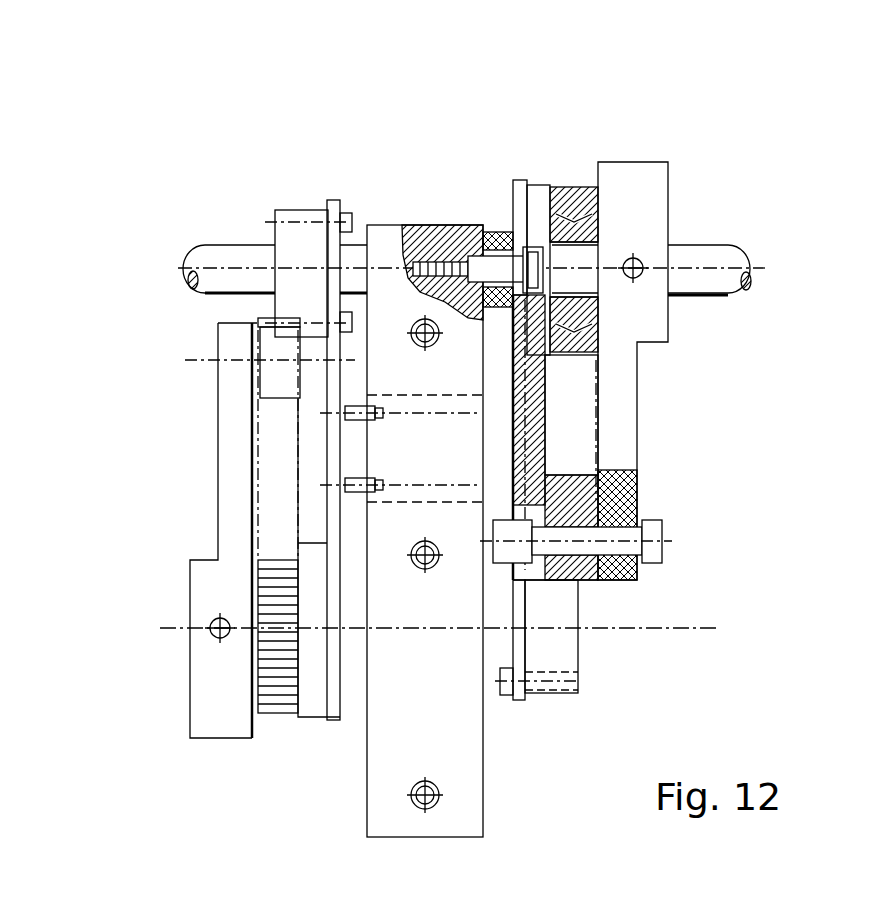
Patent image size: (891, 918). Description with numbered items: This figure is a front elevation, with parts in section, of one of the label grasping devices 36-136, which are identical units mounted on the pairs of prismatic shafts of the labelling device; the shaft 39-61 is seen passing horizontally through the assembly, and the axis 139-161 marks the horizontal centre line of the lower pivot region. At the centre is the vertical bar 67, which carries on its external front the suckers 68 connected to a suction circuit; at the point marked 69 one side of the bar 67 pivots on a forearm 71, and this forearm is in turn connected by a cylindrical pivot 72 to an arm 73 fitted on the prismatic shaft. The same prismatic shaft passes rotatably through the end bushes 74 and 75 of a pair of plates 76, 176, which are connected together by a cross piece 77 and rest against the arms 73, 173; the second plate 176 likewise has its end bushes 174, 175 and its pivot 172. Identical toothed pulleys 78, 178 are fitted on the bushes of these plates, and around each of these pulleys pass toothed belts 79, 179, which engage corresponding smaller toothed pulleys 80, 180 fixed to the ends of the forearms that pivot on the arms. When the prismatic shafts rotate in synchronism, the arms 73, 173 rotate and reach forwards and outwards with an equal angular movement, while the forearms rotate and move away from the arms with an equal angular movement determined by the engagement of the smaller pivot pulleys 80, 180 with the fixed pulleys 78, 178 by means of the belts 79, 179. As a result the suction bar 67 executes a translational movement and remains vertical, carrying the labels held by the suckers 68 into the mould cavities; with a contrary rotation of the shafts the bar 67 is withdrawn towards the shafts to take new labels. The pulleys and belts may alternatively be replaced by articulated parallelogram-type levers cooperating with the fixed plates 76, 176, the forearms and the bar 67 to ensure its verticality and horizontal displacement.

The label grasping devices 36-136 is at (406, 205).
The shaft 39-61 is at (748, 258).
The vertical bar 67 is at (485, 772).
The suckers 68 is at (430, 344).
The pivot point 69 is at (484, 266).
The forearm 71 is at (540, 460).
The cylindrical pivot 72 is at (630, 545).
The arm 73 is at (660, 202).
The end bush 74 is at (535, 183).
The end bush 75 is at (313, 710).
The plate 76 is at (516, 190).
The cross piece 77 is at (352, 500).
The toothed pulley 78 is at (588, 200).
The toothed belt 79 is at (596, 415).
The smaller toothed pulley 80 is at (585, 580).
The axis 139-161 is at (710, 628).
The cylindrical pivot 172 is at (200, 360).
The arm 173 is at (210, 562).
The end bush 174 is at (568, 650).
The end bush 175 is at (300, 215).
The plate 176 is at (333, 213).
The toothed pulley 178 is at (272, 708).
The toothed belt 179 is at (256, 458).
The smaller toothed pulley 180 is at (268, 318).